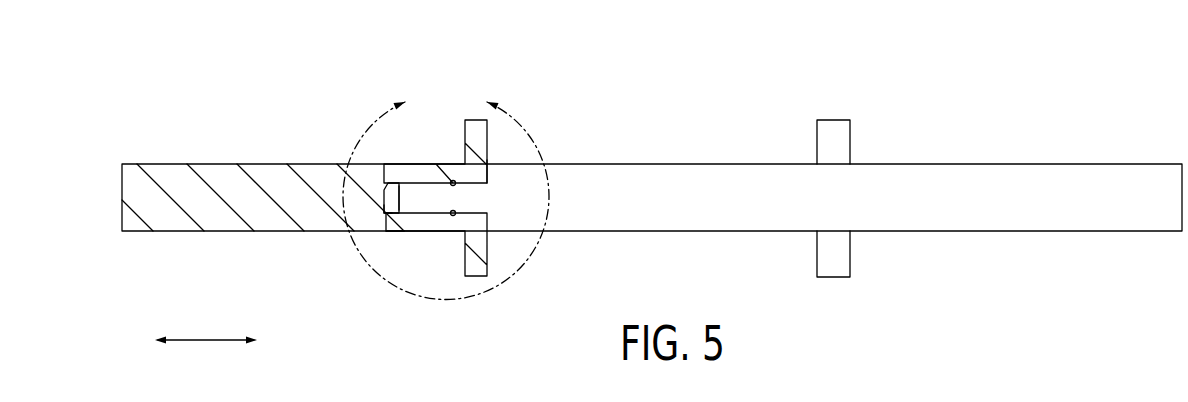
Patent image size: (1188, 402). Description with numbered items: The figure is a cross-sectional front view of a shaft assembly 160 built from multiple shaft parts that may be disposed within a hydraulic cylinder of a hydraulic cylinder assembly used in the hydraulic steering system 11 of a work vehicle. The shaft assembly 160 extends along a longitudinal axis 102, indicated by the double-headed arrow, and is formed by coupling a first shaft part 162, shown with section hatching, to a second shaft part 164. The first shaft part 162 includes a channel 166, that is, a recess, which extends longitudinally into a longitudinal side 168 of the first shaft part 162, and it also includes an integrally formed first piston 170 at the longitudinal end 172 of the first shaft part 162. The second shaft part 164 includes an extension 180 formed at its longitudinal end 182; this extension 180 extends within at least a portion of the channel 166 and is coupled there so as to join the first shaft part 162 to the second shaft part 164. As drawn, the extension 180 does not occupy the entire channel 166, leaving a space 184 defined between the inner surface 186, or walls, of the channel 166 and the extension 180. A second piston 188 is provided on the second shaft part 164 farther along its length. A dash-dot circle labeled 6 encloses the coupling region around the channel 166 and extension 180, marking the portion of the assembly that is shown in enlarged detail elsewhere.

The hydraulic steering system 11 is at (1058, 78).
The shaft assembly 160 is at (928, 45).
The first shaft part 162 is at (292, 148).
The second shaft part 164 is at (932, 140).
The channel 166 is at (394, 232).
The longitudinal side 168 is at (488, 173).
The first piston 170 is at (471, 116).
The longitudinal end 172 is at (481, 281).
The extension 180 is at (436, 194).
The longitudinal end 182 is at (427, 58).
The space 184 is at (396, 190).
The inner surface 186 is at (388, 216).
The second piston 188 is at (839, 118).
The longitudinal axis 102 is at (208, 338).
The detail view 6 is at (446, 189).